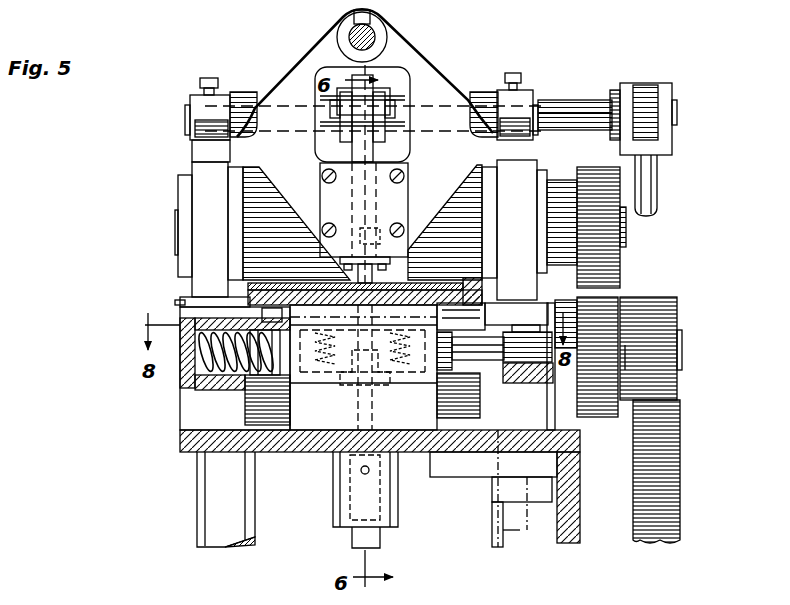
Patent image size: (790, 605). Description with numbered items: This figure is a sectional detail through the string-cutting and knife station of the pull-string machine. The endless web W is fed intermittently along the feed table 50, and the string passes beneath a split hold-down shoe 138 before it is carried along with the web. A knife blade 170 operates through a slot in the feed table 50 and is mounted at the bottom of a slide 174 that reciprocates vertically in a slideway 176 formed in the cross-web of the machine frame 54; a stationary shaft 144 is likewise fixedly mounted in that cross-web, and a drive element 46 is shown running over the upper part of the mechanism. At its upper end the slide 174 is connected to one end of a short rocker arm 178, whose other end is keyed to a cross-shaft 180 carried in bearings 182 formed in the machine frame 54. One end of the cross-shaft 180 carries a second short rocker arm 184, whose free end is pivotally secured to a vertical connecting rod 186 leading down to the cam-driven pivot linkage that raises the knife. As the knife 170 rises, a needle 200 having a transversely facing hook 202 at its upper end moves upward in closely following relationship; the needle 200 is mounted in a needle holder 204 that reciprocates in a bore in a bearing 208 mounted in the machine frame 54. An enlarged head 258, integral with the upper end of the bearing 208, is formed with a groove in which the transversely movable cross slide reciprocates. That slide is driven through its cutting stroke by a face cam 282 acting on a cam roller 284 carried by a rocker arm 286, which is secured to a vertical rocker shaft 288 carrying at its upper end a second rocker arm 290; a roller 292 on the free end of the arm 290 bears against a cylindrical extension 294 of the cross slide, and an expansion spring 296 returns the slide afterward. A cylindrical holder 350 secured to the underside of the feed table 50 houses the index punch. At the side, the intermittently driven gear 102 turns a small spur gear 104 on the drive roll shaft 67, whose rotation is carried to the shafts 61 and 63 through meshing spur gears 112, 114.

The stationary shaft 144 is at (376, 36).
The belt 46 is at (443, 58).
The bearings 182 is at (210, 107).
The cross-shaft 180 is at (558, 110).
The short rocker arm 184 is at (641, 95).
The vertical connecting rod 186 is at (652, 190).
The short rocker arm 178 is at (381, 93).
The slide 174 is at (366, 155).
The slideway 176 is at (378, 238).
The knife blade 170 is at (410, 246).
The split hold-down shoe 138 is at (357, 283).
The endless web W is at (272, 293).
The feed table 50 is at (478, 297).
The cylindrical holder 350 is at (268, 318).
The roller 292 is at (542, 310).
The cylindrical extension 294 is at (493, 353).
The second rocker arm 290 is at (536, 385).
The enlarged head 258 is at (335, 420).
The transversely facing hook 202 is at (374, 375).
The needle 200 is at (360, 418).
The expansion spring 296 is at (185, 380).
The spur gear 114 is at (624, 270).
The shaft 61 is at (627, 242).
The spur gear 112 is at (600, 405).
The small spur gear 104 is at (665, 323).
The drive roll shaft 67 is at (683, 358).
The shaft 63 is at (626, 355).
The gear 102 is at (671, 459).
The machine frame 54 is at (299, 446).
The bearing 208 is at (346, 505).
The needle holder 204 is at (360, 541).
The rocker arm 286 is at (502, 471).
The cam roller 284 is at (506, 495).
The face cam 282 is at (495, 523).
The vertical rocker shaft 288 is at (519, 549).